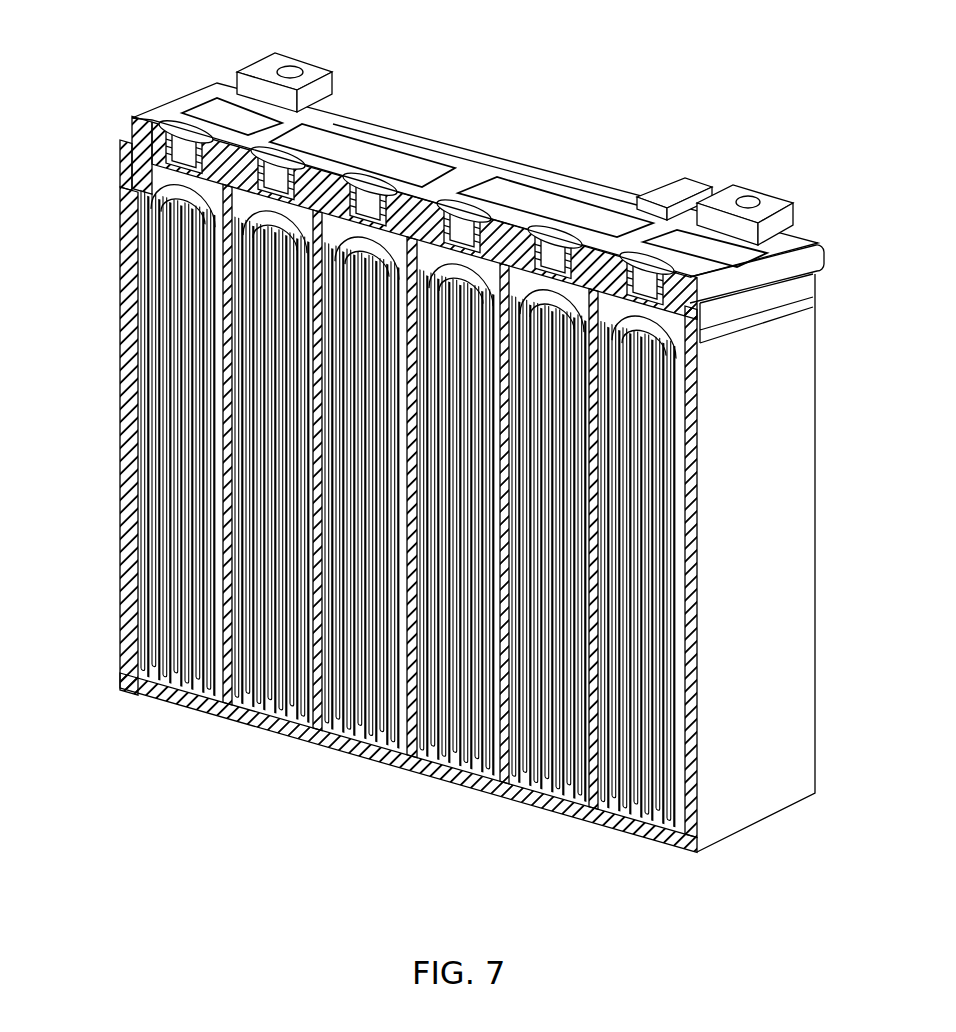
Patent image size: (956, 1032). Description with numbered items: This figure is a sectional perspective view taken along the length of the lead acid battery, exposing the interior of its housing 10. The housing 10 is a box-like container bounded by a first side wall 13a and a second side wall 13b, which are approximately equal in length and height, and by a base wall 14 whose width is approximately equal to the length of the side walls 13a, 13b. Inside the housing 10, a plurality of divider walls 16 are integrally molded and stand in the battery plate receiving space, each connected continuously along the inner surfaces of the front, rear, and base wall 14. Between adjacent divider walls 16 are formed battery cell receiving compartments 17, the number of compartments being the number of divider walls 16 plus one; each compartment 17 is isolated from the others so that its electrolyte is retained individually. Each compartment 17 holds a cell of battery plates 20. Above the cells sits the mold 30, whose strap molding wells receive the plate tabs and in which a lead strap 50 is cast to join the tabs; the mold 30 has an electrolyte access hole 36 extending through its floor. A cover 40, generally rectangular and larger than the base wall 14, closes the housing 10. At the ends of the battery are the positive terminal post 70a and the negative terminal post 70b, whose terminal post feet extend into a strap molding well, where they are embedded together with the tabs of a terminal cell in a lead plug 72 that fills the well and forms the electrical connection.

The housing 10 is at (453, 446).
The first side wall 13a is at (778, 588).
The second side wall 13b is at (118, 632).
The base wall 14 is at (407, 773).
The divider wall 16 is at (227, 672).
The battery cell receiving compartment 17 is at (588, 834).
The cell of battery plates 20 is at (650, 772).
The mold 30 is at (677, 260).
The electrolyte access hole 36 is at (165, 175).
The cover 40 is at (693, 187).
The lead strap 50 is at (577, 213).
The positive terminal post 70a is at (797, 214).
The negative terminal post 70b is at (323, 97).
The lead plug 72 is at (712, 250).